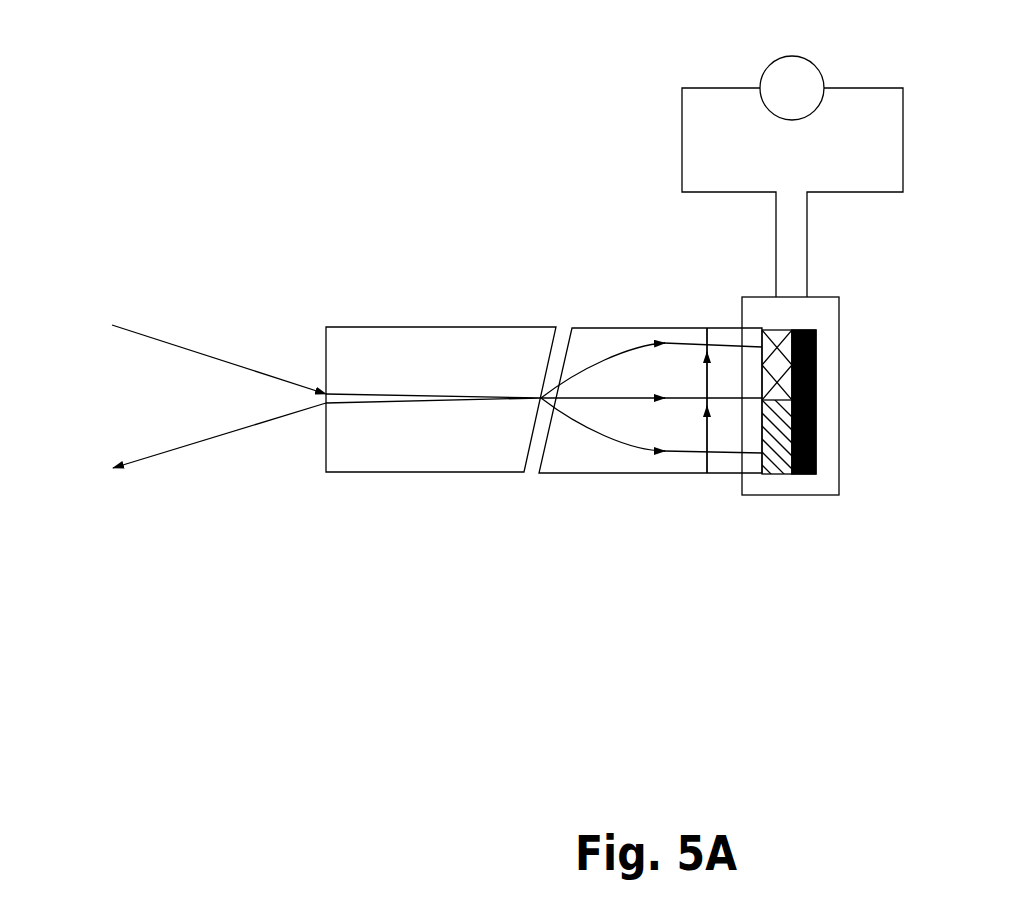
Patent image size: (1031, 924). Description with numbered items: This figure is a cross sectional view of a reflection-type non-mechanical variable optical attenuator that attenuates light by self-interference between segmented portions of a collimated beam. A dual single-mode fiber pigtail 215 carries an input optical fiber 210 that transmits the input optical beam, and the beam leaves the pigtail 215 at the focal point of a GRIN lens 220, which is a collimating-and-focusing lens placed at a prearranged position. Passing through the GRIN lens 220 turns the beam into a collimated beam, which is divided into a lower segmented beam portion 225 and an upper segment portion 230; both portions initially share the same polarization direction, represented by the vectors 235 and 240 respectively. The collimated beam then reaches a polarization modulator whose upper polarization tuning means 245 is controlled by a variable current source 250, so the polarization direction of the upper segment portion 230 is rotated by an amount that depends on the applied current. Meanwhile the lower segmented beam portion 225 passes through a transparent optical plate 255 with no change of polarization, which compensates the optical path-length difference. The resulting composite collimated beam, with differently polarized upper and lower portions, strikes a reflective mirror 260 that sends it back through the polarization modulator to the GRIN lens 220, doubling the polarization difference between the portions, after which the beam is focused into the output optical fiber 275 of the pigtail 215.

The input optical fiber 210 is at (146, 326).
The dual single-mode fiber pigtail 215 is at (402, 454).
The GRIN lens 220 is at (572, 453).
The lower segmented beam portion 225 is at (627, 421).
The upper segment portion 230 is at (627, 377).
The polarization direction vector 235 is at (707, 456).
The polarization direction vector 240 is at (707, 336).
The upper polarization tuning means 245 is at (779, 344).
The variable current source 250 is at (822, 61).
The transparent optical plate 255 is at (776, 464).
The reflective mirror 260 is at (818, 399).
The output optical fiber 275 is at (143, 463).